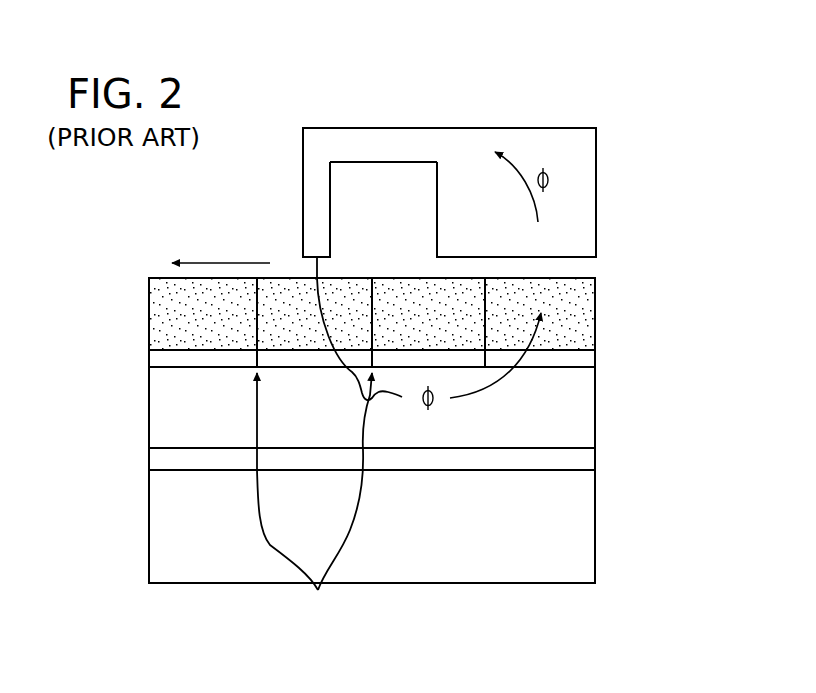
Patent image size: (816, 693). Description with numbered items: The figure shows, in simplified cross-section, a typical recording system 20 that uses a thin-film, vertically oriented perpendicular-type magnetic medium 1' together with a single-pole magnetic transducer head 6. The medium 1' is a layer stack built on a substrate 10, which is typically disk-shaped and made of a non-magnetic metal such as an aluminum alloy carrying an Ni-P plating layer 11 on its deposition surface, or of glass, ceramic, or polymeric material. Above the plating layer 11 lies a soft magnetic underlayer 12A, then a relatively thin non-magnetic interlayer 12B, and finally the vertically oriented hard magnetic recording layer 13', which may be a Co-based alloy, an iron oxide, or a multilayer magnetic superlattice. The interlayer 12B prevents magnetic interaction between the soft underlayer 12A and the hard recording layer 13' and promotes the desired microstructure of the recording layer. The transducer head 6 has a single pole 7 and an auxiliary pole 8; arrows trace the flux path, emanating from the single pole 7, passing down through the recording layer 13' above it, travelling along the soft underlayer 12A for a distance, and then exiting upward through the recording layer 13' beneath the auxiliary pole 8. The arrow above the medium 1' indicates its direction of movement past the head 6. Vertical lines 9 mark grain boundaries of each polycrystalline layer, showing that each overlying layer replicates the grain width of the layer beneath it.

The recording system 20 is at (603, 99).
The single-pole magnetic transducer head 6 is at (361, 124).
The single pole 7 is at (303, 190).
The auxiliary pole 8 is at (596, 197).
The perpendicular-type magnetic medium 1' is at (380, 421).
The hard magnetic recording layer 13' is at (410, 322).
The non-magnetic interlayer 12B is at (596, 361).
The soft magnetic underlayer 12A is at (596, 412).
The plating layer 11 is at (596, 460).
The substrate 10 is at (596, 534).
The vertical lines 9 is at (318, 590).